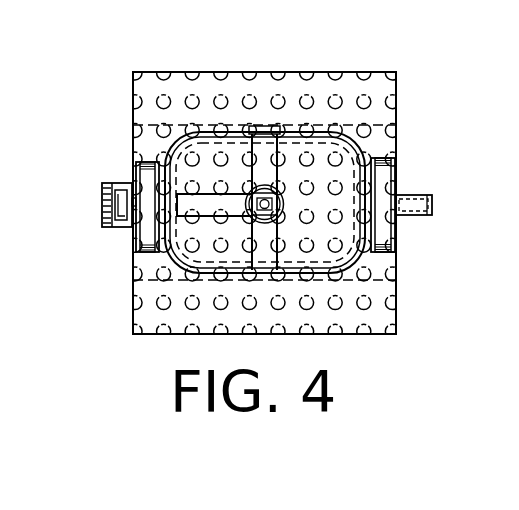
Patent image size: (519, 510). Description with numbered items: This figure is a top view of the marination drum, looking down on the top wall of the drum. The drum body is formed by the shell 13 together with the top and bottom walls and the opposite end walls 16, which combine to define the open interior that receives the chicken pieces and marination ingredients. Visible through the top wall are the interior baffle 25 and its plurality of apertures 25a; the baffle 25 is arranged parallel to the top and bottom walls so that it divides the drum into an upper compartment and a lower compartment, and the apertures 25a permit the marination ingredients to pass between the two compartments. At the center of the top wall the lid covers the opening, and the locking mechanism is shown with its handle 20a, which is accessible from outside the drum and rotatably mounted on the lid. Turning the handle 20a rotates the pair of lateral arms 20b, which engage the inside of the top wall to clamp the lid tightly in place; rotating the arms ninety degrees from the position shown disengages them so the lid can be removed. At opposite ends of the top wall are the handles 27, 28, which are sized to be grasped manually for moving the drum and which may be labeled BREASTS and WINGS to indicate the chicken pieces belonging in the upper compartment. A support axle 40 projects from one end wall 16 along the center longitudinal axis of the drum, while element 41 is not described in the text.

The shell 13 is at (369, 72).
The end wall 16 is at (133, 117).
The interior baffle 25 is at (383, 130).
The apertures 25a is at (367, 105).
The handle 27 is at (135, 231).
The handle 28 is at (394, 238).
The support axle 40 is at (433, 199).
The plug 41 is at (433, 214).
The handle 20a is at (213, 206).
The lateral arms 20b is at (265, 222).